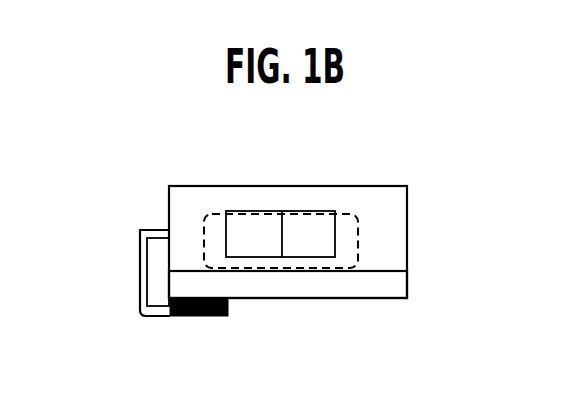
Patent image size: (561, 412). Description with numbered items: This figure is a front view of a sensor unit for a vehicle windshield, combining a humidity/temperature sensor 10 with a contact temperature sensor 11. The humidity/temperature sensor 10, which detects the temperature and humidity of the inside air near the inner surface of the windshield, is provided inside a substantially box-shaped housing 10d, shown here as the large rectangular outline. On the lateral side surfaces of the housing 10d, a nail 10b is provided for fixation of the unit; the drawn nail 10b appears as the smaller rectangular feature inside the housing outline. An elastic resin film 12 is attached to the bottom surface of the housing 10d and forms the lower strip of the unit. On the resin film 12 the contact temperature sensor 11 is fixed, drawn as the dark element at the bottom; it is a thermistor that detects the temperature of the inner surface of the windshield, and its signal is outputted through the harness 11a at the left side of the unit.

The humidity/temperature sensor 10 is at (358, 241).
The nail 10b is at (257, 232).
The housing 10d is at (355, 186).
The contact temperature sensor 11 is at (202, 316).
The harness 11a is at (140, 268).
The elastic resin film 12 is at (397, 285).